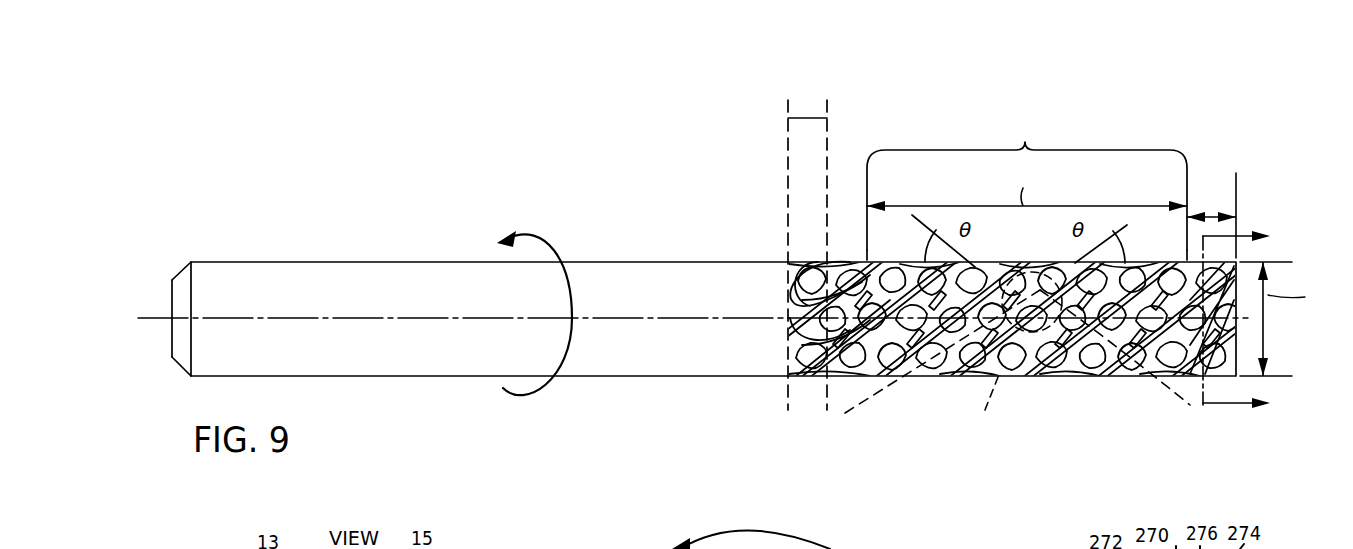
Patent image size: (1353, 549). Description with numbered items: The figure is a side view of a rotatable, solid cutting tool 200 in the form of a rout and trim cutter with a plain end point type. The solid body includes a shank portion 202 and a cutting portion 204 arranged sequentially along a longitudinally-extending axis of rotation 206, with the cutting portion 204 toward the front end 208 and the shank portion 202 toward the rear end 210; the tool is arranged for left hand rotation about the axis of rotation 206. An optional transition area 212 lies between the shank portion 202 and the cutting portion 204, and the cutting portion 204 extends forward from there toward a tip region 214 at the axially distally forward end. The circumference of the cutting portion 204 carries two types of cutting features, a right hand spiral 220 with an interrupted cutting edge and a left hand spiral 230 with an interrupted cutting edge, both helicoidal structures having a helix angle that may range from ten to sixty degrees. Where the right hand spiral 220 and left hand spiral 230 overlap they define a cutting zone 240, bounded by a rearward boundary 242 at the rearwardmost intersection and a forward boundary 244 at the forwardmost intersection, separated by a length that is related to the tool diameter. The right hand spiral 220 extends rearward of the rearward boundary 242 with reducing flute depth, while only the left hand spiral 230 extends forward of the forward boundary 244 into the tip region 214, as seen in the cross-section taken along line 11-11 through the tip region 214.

The cutting tool 200 is at (437, 226).
The shank portion 202 is at (905, 118).
The cutting portion 204 is at (886, 255).
The axis of rotation 206 is at (152, 318).
The front end 208 is at (1280, 340).
The rear end 210 is at (154, 347).
The transition area 212 is at (807, 116).
The tip region 214 is at (1211, 213).
The right hand spiral 220 is at (1157, 393).
The left hand spiral 230 is at (883, 398).
The cutting zone 240 is at (1027, 184).
The rearward boundary 242 is at (868, 194).
The forward boundary 244 is at (1186, 194).
The line 11- 11 is at (1250, 321).